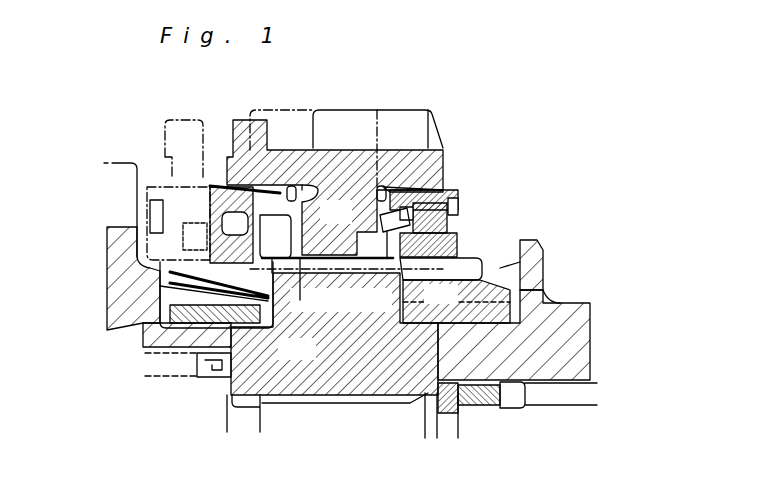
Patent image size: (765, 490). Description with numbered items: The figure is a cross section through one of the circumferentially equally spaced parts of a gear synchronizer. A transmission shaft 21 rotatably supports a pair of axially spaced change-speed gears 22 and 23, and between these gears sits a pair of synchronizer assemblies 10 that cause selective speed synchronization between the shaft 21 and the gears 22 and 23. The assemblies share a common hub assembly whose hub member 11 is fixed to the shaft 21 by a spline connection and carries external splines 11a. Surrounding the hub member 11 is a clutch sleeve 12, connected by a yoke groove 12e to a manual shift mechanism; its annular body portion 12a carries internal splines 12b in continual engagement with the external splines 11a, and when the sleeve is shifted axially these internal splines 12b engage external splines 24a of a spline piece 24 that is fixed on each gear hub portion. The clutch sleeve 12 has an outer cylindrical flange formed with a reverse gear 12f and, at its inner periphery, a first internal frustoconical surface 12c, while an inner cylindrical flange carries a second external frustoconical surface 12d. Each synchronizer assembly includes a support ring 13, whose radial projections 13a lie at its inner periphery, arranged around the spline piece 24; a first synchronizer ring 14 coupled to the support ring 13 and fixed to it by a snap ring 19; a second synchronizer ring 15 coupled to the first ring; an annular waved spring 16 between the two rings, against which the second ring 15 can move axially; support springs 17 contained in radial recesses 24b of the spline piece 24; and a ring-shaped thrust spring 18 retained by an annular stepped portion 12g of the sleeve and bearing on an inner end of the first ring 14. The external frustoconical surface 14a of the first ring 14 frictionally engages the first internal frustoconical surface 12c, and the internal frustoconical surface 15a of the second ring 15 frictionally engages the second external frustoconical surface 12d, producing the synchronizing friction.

The synchronizer assembly 10 is at (385, 92).
The hub member 11 is at (314, 396).
The external splines 11a is at (378, 272).
The clutch sleeve 12 is at (342, 108).
The annular body portion 12a is at (350, 224).
The internal splines 12b is at (346, 291).
The first internal frustoconical surface 12c is at (432, 182).
The second external frustoconical surface 12d is at (300, 278).
The yoke groove 12e is at (320, 146).
The reverse gear 12f is at (410, 110).
The annular stepped portion 12g is at (412, 186).
The support ring 13 is at (479, 252).
The radial projections 13a is at (265, 328).
The first synchronizer ring 14 is at (228, 187).
The external frustoconical surface 14a is at (248, 178).
The second synchronizer ring 15 is at (205, 207).
The internal frustoconical surface 15a is at (456, 301).
The annular waved spring 16 is at (304, 186).
The support springs 17 is at (165, 278).
The ring-shaped thrust spring 18 is at (297, 190).
The snap ring 19 is at (459, 206).
The transmission shaft 21 is at (553, 472).
The change-speed gear 22 is at (110, 190).
The change-speed gear 23 is at (588, 332).
The spline piece 24 is at (540, 294).
The external splines 24a is at (505, 268).
The radial recesses 24b is at (183, 296).